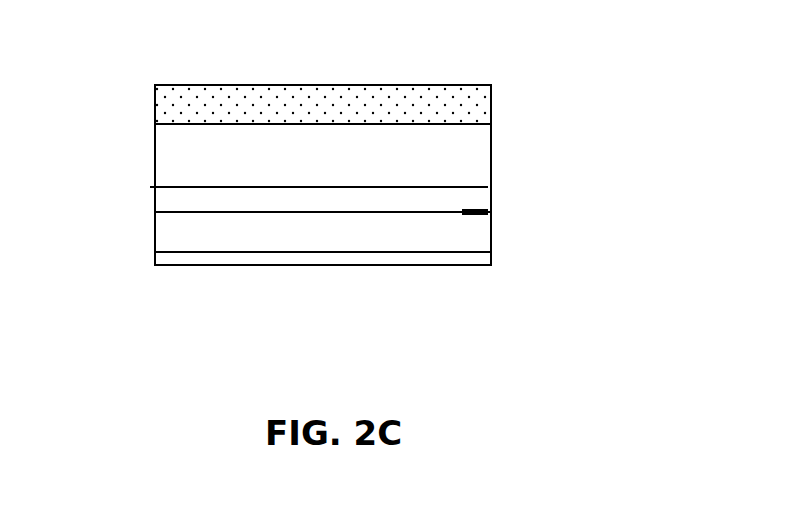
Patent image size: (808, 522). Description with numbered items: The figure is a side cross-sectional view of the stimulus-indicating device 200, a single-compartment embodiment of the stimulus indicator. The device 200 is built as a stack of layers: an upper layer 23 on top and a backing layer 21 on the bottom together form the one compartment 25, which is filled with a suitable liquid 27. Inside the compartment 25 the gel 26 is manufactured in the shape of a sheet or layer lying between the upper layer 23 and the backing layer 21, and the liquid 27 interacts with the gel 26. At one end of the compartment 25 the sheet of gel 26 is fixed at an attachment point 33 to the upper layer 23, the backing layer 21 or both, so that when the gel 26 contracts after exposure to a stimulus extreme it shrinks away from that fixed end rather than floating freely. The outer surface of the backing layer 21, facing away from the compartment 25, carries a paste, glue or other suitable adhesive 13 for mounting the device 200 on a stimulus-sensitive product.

The adhesive 13 is at (432, 266).
The backing layer 21 is at (491, 238).
The gel 26 is at (321, 202).
The attachment point 33 is at (489, 212).
The compartment 25 is at (454, 160).
The liquid 27 is at (251, 174).
The upper layer 23 is at (466, 100).
The stimulus-indicating device 200 is at (313, 289).